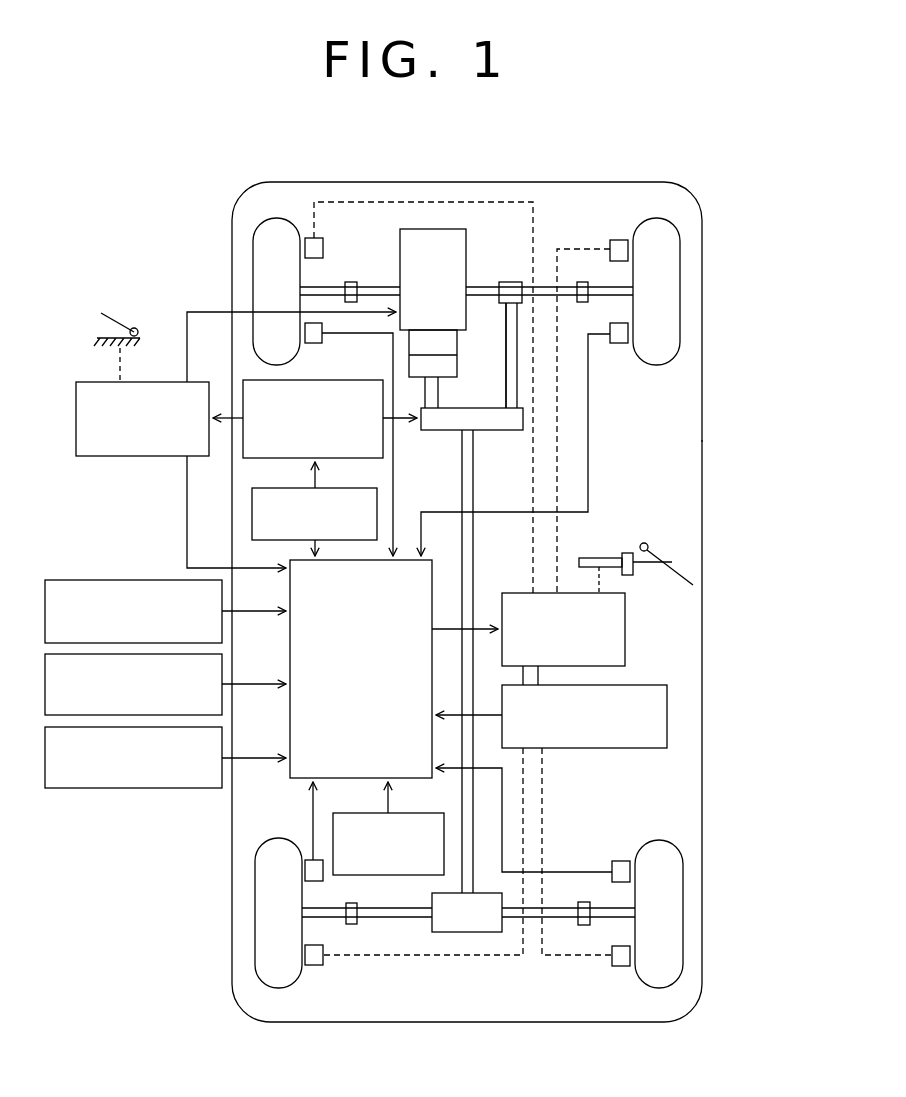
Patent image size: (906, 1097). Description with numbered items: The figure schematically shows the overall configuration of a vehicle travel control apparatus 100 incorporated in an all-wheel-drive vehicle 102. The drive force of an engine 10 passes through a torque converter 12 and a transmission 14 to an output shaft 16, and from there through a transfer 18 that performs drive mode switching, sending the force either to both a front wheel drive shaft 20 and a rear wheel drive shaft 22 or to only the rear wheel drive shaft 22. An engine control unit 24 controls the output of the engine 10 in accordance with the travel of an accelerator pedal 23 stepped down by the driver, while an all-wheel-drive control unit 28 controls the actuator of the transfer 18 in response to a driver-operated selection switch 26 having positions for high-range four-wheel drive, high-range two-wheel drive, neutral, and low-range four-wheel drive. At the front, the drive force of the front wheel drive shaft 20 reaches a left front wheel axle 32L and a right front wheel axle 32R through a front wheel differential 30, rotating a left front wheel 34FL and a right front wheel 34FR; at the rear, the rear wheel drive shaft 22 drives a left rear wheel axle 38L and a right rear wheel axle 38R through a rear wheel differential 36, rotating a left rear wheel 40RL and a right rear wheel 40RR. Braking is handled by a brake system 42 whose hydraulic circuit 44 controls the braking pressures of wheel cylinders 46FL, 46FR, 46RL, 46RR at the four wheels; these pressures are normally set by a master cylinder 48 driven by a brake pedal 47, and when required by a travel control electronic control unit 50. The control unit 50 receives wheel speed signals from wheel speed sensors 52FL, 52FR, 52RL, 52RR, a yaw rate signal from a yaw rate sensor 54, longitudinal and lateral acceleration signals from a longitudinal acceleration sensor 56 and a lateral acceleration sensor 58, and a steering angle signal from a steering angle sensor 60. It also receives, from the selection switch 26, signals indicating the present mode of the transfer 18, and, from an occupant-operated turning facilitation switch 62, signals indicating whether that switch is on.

The vehicle travel control apparatus 100 is at (587, 195).
The vehicle 102 is at (703, 441).
The engine 10 is at (421, 276).
The torque converter 12 is at (421, 318).
The transmission 14 is at (457, 360).
The output shaft 16 is at (438, 393).
The transfer 18 is at (498, 430).
The front wheel drive shaft 20 is at (506, 346).
The rear wheel drive shaft 22 is at (473, 553).
The accelerator pedal 23 is at (118, 320).
The engine control unit 24 is at (140, 456).
The selection switch 26 is at (377, 507).
The all-wheel-drive control unit 28 is at (335, 458).
The front wheel differential 30 is at (510, 282).
The left front wheel axle 32L is at (372, 283).
The right front wheel axle 32R is at (545, 297).
The left front wheel 34FL is at (255, 252).
The right front wheel 34FR is at (680, 290).
The rear wheel differential 36 is at (468, 932).
The left rear wheel axle 38L is at (397, 918).
The right rear wheel axle 38R is at (553, 913).
The left rear wheel 40RL is at (255, 912).
The right rear wheel 40RR is at (683, 912).
The brake system 42 is at (601, 639).
The hydraulic circuit 44 is at (550, 661).
The wheel cylinder 46FL is at (320, 246).
The wheel cylinder 46FR is at (611, 246).
The wheel cylinder 46RL is at (313, 965).
The wheel cylinder 46RR is at (623, 966).
The brake pedal 47 is at (668, 558).
The master cylinder 48 is at (601, 553).
The travel control electronic control unit 50 is at (348, 726).
The wheel speed sensor 52FL is at (322, 343).
The wheel speed sensor 52FR is at (620, 343).
The wheel speed sensor 52RL is at (307, 857).
The wheel speed sensor 52RR is at (622, 861).
The yaw rate sensor 54 is at (133, 580).
The longitudinal acceleration sensor 56 is at (222, 703).
The lateral acceleration sensor 58 is at (133, 788).
The steering angle sensor 60 is at (390, 875).
The turning facilitation switch 62 is at (583, 748).